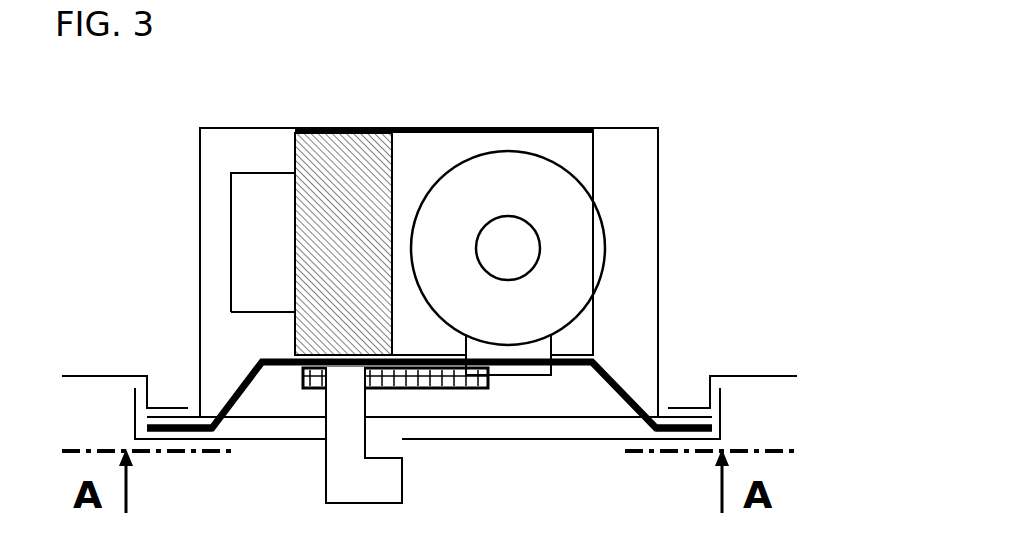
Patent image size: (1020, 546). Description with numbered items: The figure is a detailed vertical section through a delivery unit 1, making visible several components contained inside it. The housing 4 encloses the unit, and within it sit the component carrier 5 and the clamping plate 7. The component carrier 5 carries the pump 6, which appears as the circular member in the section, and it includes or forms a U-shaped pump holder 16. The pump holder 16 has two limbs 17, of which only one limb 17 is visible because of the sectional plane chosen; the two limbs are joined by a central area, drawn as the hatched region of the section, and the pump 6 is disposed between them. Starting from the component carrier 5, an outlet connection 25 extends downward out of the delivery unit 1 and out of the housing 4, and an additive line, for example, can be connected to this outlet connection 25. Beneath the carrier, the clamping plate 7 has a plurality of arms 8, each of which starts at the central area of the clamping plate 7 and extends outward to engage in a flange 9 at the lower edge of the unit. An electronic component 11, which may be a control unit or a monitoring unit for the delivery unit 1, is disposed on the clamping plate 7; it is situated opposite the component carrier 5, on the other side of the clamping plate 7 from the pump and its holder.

The delivery unit 1 is at (162, 114).
The housing 4 is at (658, 195).
The component carrier 5 is at (595, 151).
The pump 6 is at (605, 252).
The clamping plate 7 is at (586, 368).
The arm 8 is at (197, 430).
The flange 9 is at (684, 413).
The electronic component 11 is at (457, 388).
The pump holder 16 is at (295, 148).
The limb 17 is at (593, 140).
The outlet connection 25 is at (326, 482).